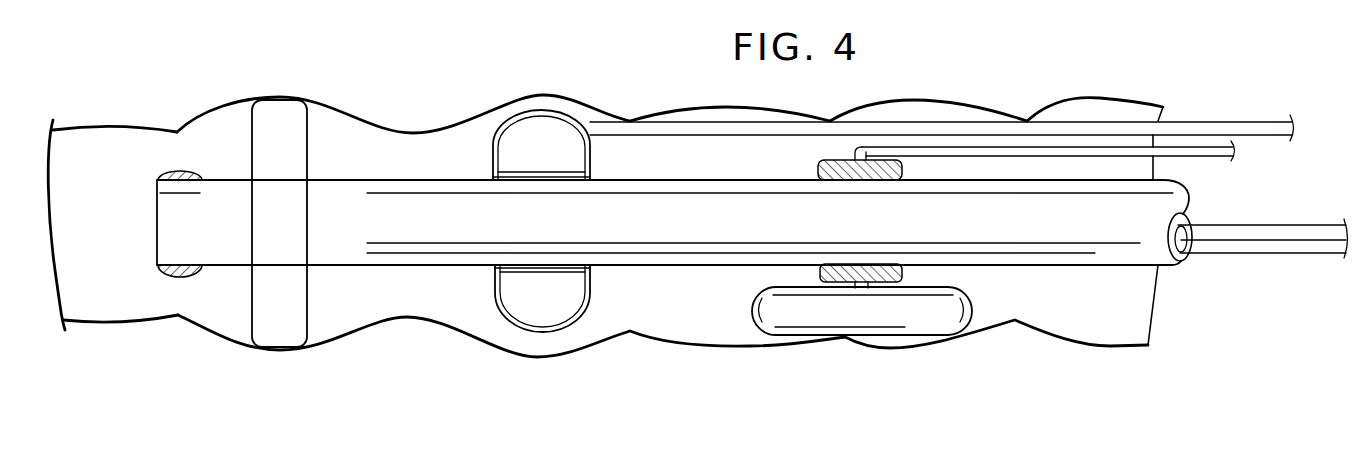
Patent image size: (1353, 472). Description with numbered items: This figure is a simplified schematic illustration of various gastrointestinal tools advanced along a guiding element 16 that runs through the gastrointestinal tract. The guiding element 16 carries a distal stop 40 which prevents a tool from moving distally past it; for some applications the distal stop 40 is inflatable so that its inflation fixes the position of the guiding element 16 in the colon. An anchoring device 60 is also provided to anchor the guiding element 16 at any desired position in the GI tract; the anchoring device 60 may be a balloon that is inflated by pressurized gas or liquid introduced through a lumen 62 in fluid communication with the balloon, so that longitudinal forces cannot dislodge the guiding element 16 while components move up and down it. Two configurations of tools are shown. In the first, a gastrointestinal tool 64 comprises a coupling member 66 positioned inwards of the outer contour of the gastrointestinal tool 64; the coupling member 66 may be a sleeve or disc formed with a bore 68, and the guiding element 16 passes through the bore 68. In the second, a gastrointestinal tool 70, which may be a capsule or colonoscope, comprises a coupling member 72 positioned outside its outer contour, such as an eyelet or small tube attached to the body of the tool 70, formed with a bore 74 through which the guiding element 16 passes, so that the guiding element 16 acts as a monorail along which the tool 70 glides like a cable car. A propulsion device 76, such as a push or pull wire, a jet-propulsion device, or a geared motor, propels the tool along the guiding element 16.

The guiding element 16 is at (328, 198).
The distal stop 40 is at (167, 276).
The anchoring device 60 is at (264, 328).
The lumen 62 is at (1303, 226).
The gastrointestinal tool 64 is at (552, 323).
The coupling member 66 is at (498, 268).
The bore 68 is at (582, 177).
The gastrointestinal tool 70 is at (813, 317).
The coupling member 72 is at (885, 275).
The bore 74 is at (908, 266).
The propulsion device 76 is at (1197, 150).